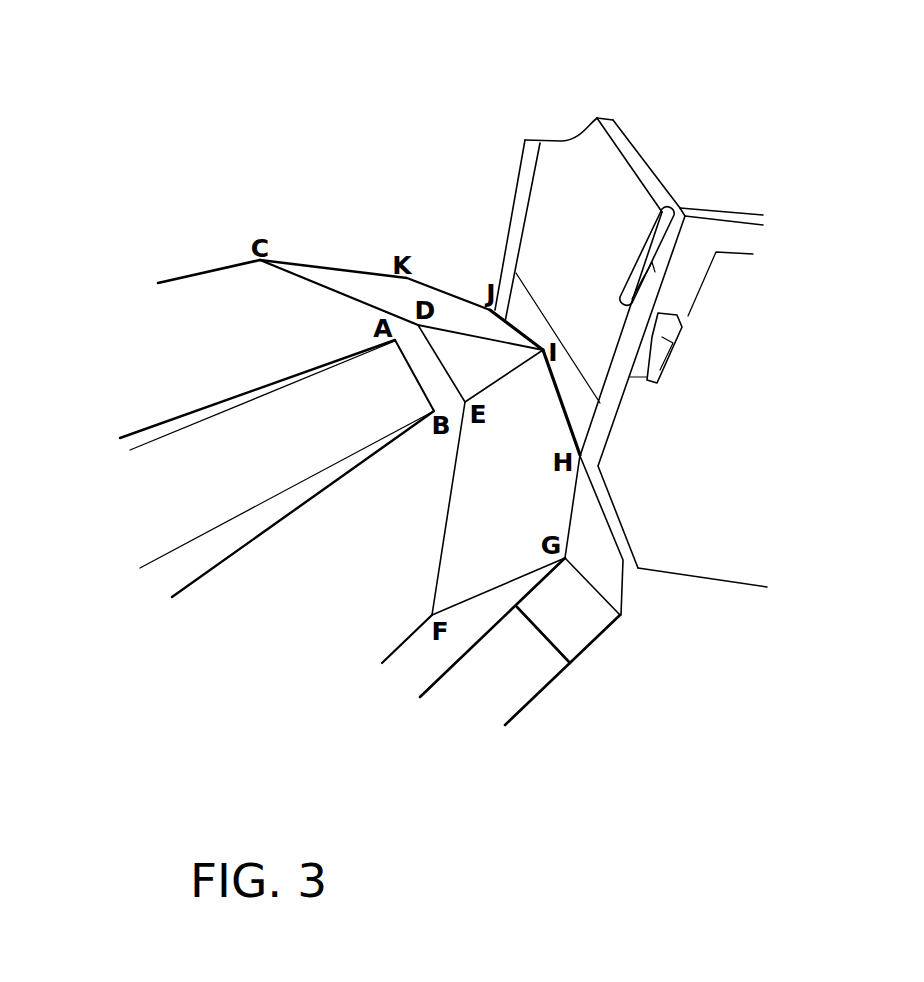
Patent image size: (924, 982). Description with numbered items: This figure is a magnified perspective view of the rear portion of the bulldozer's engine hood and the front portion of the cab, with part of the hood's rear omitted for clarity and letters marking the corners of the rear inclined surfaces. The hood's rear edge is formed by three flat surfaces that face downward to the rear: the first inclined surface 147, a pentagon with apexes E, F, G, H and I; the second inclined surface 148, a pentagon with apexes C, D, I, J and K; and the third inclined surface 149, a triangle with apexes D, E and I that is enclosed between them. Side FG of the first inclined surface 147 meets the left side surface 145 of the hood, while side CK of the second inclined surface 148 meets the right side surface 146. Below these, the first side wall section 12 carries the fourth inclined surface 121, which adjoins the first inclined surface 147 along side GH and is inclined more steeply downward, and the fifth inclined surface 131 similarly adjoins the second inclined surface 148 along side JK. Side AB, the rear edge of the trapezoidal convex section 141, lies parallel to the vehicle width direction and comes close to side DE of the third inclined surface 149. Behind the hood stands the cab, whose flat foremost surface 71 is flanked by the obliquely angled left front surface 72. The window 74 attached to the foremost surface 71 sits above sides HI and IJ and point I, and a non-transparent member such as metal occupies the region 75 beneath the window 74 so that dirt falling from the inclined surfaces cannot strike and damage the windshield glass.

The first side wall section 12 is at (533, 663).
The foremost surface 71 is at (613, 132).
The left front surface 72 is at (692, 457).
The window 74 is at (587, 218).
The region 75 is at (573, 395).
The fourth inclined surface 121 is at (603, 568).
The fifth inclined surface 131 is at (449, 290).
The convex section 141 is at (223, 445).
The left side surface 145 is at (448, 652).
The right side surface 146 is at (327, 267).
The first inclined surface 147 is at (502, 543).
The second inclined surface 148 is at (365, 290).
The third inclined surface 149 is at (470, 358).